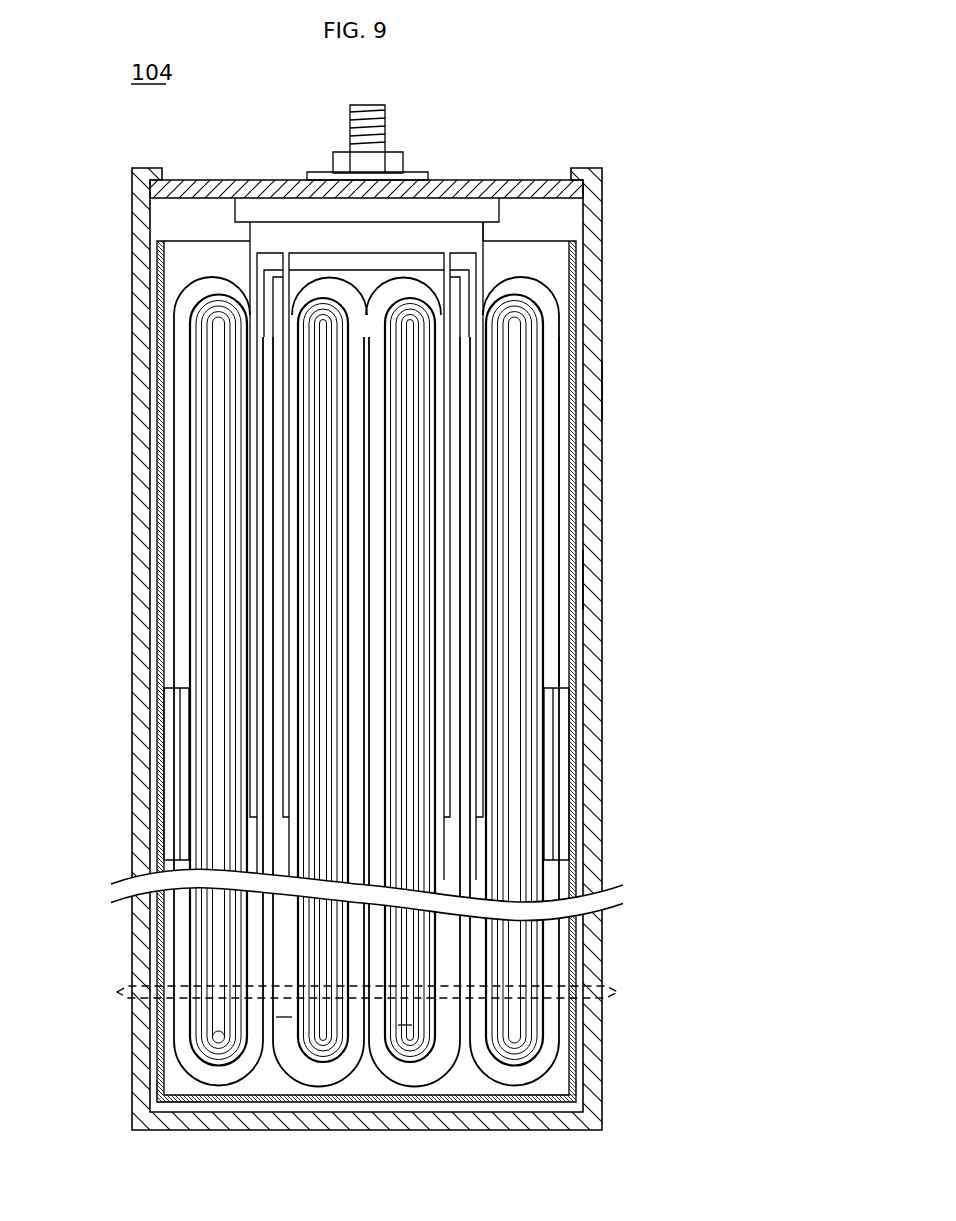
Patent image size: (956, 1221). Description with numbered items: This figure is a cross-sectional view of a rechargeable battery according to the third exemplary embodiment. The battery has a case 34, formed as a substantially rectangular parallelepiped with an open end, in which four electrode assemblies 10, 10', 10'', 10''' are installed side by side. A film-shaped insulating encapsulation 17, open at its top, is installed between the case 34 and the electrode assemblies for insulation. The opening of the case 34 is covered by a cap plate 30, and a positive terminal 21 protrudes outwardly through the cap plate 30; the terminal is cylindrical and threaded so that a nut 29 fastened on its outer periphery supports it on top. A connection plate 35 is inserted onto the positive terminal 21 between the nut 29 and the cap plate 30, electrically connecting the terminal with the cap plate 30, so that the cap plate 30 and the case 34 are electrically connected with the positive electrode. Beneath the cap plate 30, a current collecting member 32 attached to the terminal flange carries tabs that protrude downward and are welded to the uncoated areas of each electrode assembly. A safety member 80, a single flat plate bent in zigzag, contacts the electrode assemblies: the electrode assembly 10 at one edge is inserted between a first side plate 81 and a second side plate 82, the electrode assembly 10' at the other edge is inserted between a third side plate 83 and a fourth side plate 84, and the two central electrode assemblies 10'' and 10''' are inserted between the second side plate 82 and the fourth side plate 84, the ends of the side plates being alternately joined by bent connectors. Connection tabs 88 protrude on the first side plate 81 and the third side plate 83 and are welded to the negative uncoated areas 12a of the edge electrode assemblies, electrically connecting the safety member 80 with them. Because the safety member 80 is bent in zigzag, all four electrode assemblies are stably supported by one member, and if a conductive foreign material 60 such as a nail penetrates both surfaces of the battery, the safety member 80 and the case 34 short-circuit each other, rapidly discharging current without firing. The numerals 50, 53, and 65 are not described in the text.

The electrode assembly 10 is at (570, 671).
The electrode assembly 10' is at (164, 671).
The electrode assembly 10'' is at (435, 597).
The electrode assembly 10''' is at (292, 586).
The negative uncoated area 12a is at (238, 1060).
The insulating encapsulation 17 is at (584, 578).
The positive terminal 21 is at (350, 125).
The nut 29 is at (394, 152).
The cap plate 30 is at (523, 190).
The current collecting member 32 is at (488, 232).
The case 34 is at (603, 392).
The connection plate 35 is at (420, 173).
The case 50 is at (150, 1052).
The insulating sheet bottom portion 53 is at (180, 1100).
The conductive foreign material 60 is at (117, 992).
The insulating sheet bottom portion 65 is at (548, 1098).
The safety member 80 is at (338, 268).
The first side plate 81 is at (561, 655).
The second side plate 82 is at (161, 932).
The third side plate 83 is at (412, 1025).
The fourth side plate 84 is at (295, 1017).
The connection tab 88 is at (173, 770).